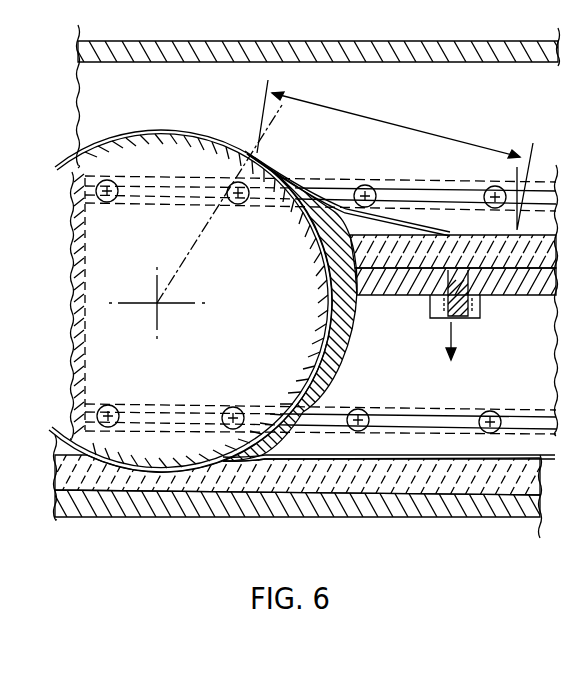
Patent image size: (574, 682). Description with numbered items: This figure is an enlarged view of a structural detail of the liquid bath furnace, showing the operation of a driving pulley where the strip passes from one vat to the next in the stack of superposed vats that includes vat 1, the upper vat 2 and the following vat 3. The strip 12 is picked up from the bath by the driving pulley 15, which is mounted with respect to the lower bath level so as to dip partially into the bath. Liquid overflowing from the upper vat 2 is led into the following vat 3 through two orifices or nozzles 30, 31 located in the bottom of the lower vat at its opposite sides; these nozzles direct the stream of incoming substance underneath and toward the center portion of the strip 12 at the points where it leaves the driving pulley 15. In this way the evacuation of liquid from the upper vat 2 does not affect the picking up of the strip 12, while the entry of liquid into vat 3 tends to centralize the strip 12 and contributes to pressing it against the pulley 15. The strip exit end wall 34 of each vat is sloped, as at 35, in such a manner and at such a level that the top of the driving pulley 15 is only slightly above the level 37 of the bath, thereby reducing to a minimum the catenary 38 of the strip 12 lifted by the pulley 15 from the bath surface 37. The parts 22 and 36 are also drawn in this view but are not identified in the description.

The vat 1 is at (413, 55).
The upper vat 2 is at (411, 291).
The following vat 3 is at (428, 517).
The strip 12 is at (377, 214).
The driving pulley 15 is at (195, 222).
The pin 22 is at (482, 312).
The nozzle 30 is at (273, 455).
The nozzle 31 is at (273, 455).
The strip exit end wall 34 is at (330, 357).
The sloped portion of exit end wall 35 is at (336, 210).
The drum shell 36 is at (190, 301).
The bath level 37 is at (382, 236).
The catenary of the strip 38 is at (395, 155).